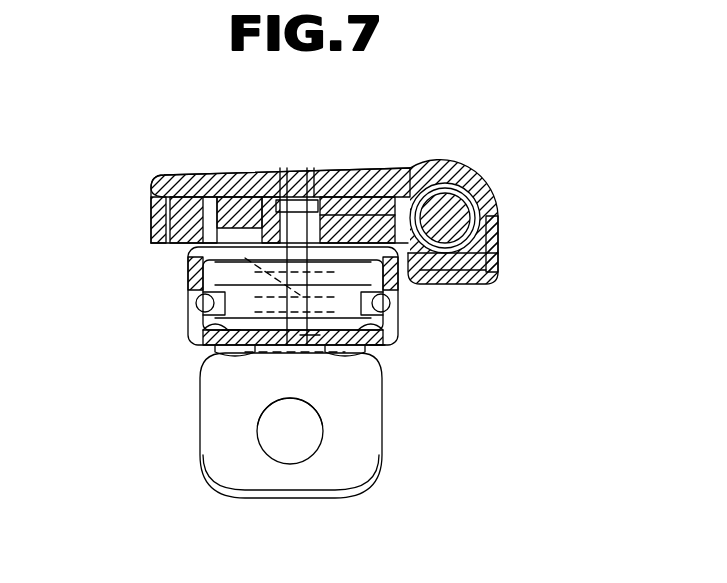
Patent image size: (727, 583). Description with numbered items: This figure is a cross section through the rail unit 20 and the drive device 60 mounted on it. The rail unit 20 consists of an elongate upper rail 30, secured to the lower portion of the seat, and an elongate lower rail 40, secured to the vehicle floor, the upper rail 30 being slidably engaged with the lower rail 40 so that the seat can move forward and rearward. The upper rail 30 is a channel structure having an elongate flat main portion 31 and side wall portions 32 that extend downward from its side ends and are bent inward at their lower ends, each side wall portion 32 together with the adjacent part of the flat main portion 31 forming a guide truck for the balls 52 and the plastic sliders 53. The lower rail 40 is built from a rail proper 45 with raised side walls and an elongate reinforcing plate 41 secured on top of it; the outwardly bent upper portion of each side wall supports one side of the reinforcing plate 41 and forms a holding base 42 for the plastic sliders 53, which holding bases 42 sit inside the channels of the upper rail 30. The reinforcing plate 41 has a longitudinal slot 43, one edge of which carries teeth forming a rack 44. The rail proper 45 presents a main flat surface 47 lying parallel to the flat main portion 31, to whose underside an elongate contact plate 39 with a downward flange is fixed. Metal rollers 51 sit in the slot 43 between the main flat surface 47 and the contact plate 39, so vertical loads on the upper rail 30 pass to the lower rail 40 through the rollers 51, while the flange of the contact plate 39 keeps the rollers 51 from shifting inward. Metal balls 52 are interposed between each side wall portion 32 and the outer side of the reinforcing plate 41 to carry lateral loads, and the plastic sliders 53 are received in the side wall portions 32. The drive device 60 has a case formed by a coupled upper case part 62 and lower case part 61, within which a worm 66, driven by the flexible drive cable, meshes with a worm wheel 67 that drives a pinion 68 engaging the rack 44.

The rail unit 20 is at (505, 168).
The upper rail 30 is at (186, 258).
The flat main portion 31 is at (300, 168).
The side wall portions 32 is at (190, 300).
The contact plate 39 is at (277, 168).
The lower rail 40 is at (405, 298).
The reinforcing plate 41 is at (398, 320).
The holding base 42 is at (203, 345).
The slot 43 is at (222, 330).
The rack 44 is at (312, 335).
The rail proper 45 is at (383, 355).
The main flat surface 47 is at (257, 355).
The metal rollers 51 is at (203, 170).
The metal balls 52 is at (205, 335).
The plastic sliders 53 is at (200, 278).
The drive device 60 is at (390, 168).
The lower case part 61 is at (500, 257).
The upper case part 62 is at (475, 168).
The worm 66 is at (500, 213).
The worm wheel 67 is at (355, 168).
The pinion 68 is at (282, 335).